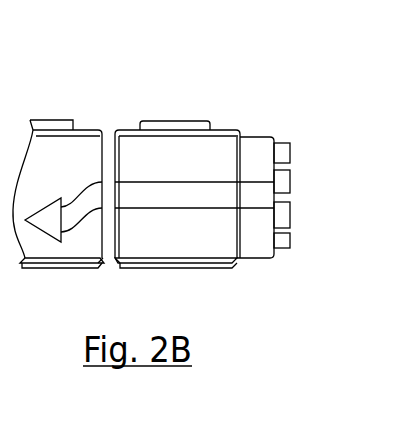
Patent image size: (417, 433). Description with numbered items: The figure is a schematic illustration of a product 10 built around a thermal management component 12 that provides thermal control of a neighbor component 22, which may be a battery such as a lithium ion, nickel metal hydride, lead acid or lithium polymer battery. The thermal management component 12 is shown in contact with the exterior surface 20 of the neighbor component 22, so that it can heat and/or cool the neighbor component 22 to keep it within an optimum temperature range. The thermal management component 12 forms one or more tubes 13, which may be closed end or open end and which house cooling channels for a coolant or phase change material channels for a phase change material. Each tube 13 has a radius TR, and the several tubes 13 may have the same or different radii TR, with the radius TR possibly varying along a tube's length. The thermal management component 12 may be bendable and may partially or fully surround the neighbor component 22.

The product 10 is at (282, 77).
The thermal management component 12 is at (259, 136).
The tube 13 is at (290, 163).
The exterior surface 20 is at (212, 130).
The neighbor component 22 is at (165, 120).
The radius TR is at (290, 148).